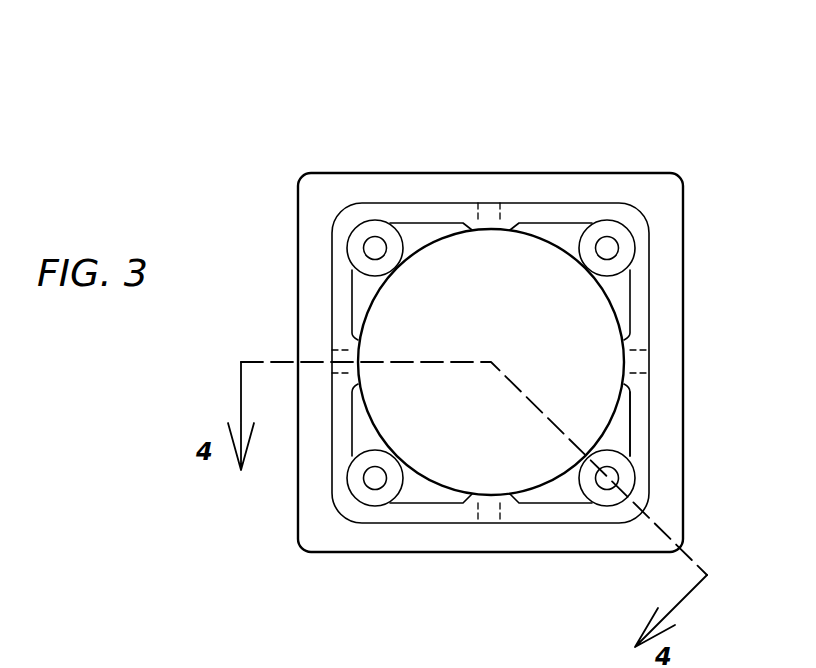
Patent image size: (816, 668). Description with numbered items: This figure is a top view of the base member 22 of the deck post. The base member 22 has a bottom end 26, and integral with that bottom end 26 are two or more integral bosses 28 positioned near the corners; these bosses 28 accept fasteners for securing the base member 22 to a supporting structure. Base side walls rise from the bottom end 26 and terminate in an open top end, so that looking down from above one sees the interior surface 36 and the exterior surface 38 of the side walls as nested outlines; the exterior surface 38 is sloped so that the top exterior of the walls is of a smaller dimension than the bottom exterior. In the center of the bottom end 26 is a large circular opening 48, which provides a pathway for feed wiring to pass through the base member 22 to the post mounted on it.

The base member 22 is at (452, 100).
The bottom end 26 is at (565, 237).
The integral bosses 28 is at (622, 250).
The interior surface 36 is at (604, 407).
The exterior surface 38 is at (603, 409).
The opening 48 is at (583, 325).